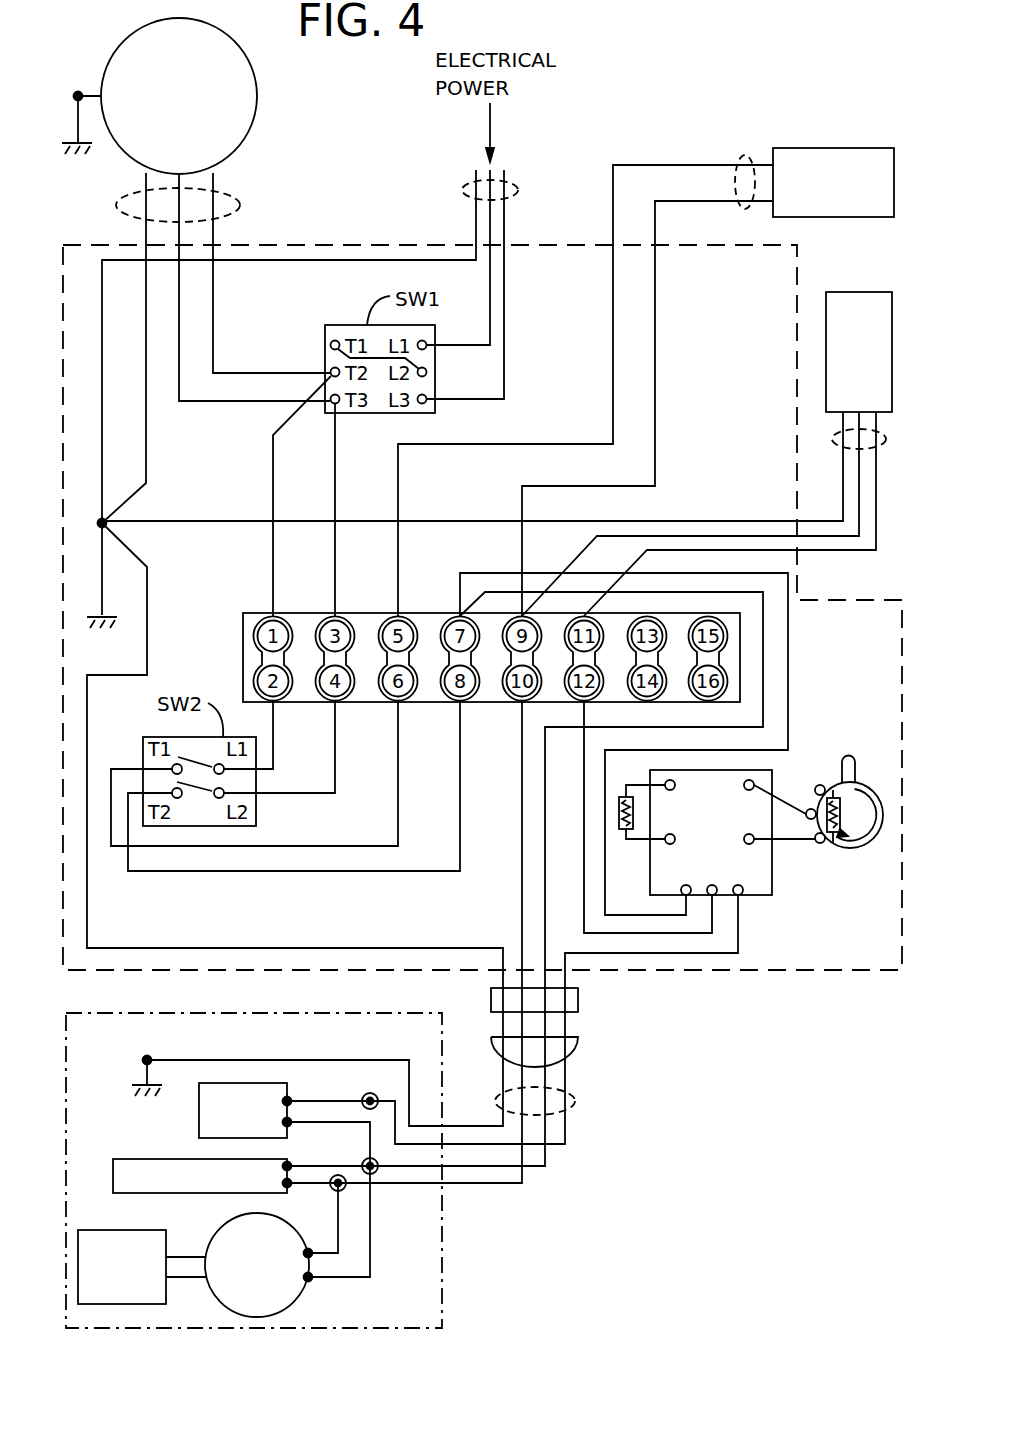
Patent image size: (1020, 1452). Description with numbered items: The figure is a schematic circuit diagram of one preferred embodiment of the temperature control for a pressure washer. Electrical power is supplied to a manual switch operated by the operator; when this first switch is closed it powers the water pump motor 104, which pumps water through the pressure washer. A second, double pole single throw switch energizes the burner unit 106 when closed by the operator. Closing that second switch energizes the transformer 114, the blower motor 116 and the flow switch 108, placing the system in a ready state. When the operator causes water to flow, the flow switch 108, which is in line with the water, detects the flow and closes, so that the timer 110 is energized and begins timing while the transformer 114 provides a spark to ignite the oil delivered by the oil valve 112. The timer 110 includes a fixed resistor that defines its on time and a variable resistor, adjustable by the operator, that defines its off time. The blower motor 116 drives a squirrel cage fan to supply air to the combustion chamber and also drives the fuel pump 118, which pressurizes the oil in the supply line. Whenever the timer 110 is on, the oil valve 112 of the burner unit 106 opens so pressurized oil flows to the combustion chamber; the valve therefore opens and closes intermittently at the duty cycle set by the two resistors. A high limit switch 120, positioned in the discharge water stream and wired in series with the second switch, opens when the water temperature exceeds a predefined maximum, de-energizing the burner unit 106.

The water pump motor 104 is at (258, 100).
The burner unit 106 is at (442, 1237).
The flow switch 108 is at (835, 292).
The timer 110 is at (728, 833).
The oil valve 112 is at (199, 1113).
The transformer 114 is at (113, 1177).
The blower motor 116 is at (298, 1298).
The fuel pump 118 is at (115, 1230).
The high limit switch 120 is at (802, 148).